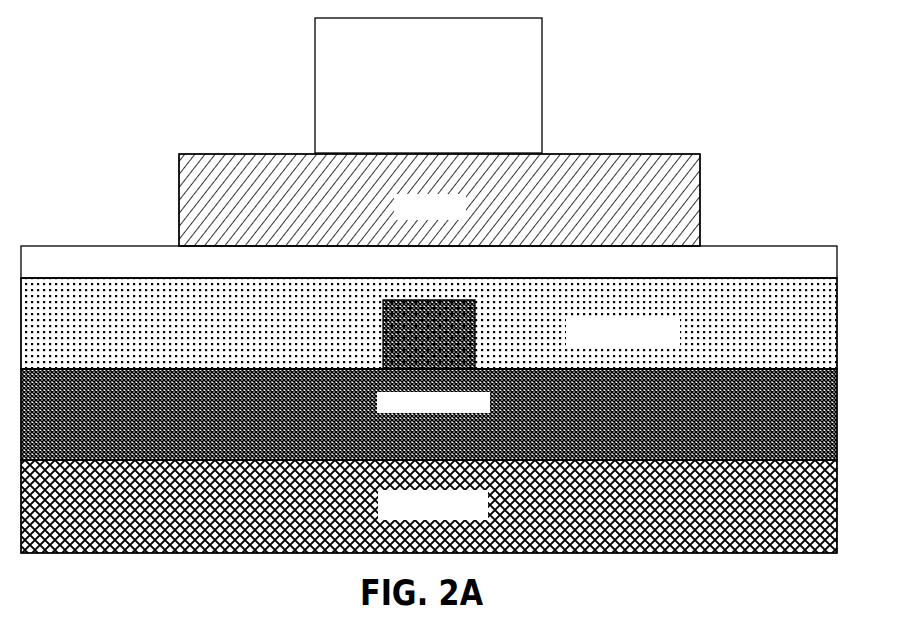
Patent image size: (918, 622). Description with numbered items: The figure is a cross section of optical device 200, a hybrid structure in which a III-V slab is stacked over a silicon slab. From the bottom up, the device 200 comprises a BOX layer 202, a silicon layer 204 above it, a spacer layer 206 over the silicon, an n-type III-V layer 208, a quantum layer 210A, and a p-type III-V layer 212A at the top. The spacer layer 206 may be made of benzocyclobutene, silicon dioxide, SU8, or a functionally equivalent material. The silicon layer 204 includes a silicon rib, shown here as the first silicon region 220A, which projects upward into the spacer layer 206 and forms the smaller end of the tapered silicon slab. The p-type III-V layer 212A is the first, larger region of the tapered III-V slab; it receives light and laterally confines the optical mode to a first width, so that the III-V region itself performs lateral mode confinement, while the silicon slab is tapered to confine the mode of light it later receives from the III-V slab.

The optical device 200 is at (643, 598).
The BOX layer 202 is at (429, 506).
The silicon layer 204 is at (429, 414).
The spacer layer 206 is at (429, 323).
The n-type III-V layer 208 is at (730, 258).
The quantum layer 210A is at (439, 200).
The first III-V region 212A is at (428, 85).
The first silicon region 220A is at (383, 323).